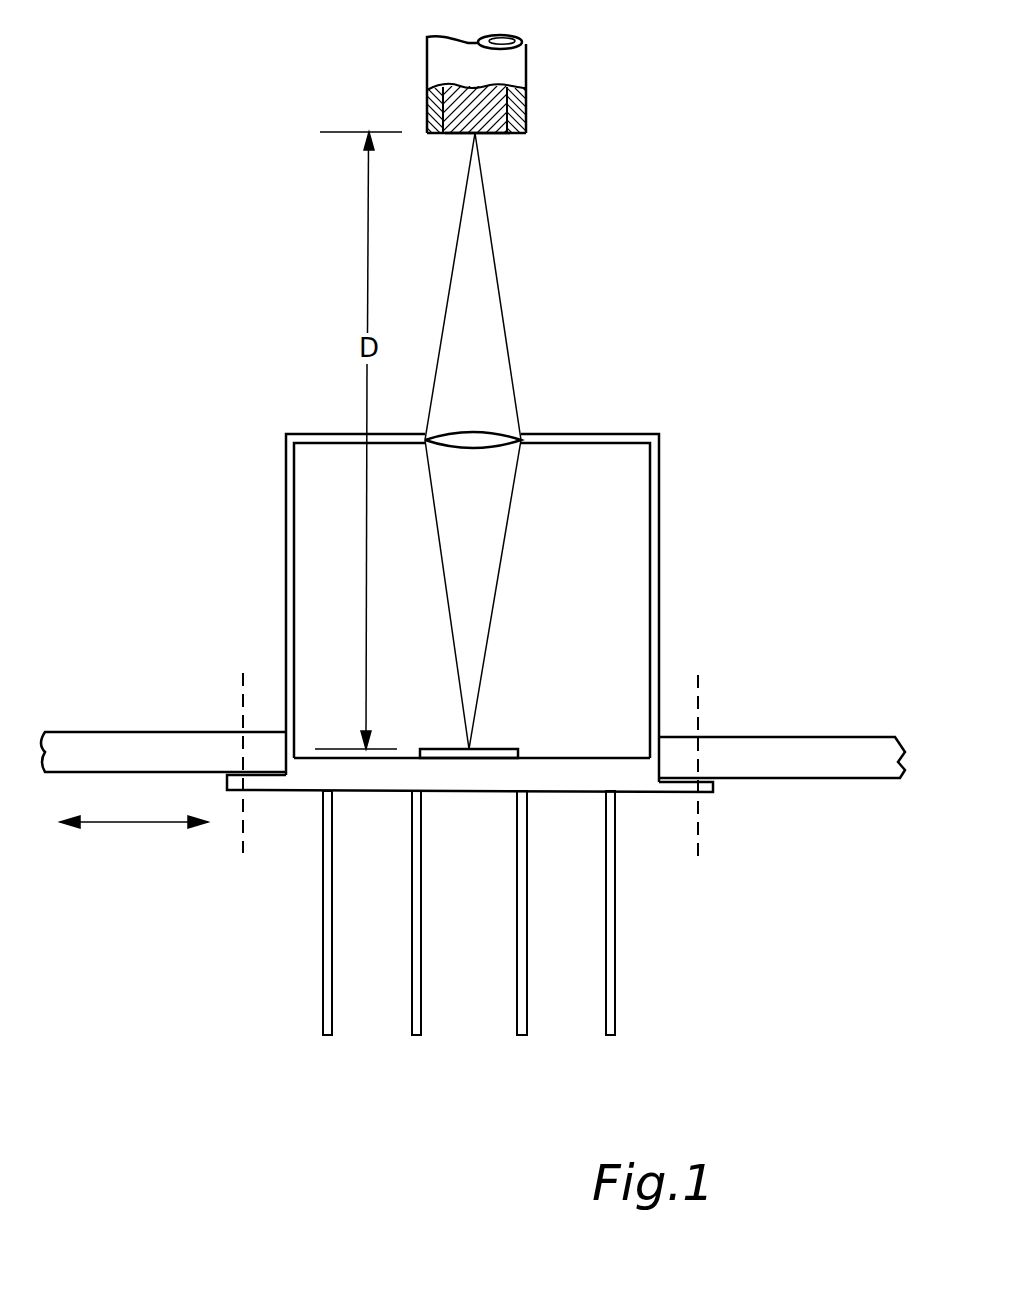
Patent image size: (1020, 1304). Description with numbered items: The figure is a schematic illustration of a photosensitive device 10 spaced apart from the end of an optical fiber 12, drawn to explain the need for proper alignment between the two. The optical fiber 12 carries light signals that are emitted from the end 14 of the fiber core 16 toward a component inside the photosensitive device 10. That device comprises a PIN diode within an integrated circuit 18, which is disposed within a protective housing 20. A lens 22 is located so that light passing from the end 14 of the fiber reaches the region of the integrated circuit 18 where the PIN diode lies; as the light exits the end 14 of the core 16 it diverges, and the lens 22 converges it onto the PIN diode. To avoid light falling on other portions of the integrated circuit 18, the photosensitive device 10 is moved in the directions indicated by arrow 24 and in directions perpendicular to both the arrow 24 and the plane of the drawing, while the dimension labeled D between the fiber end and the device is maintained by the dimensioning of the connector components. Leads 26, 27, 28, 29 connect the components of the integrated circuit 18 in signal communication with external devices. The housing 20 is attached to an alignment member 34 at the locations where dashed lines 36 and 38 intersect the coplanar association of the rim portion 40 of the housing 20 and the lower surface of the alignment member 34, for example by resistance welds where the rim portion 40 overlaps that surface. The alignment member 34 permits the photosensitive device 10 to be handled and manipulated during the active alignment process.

The photosensitive device 10 is at (722, 502).
The optical fiber 12 is at (516, 68).
The end of the fiber core 14 is at (490, 134).
The fiber core 16 is at (498, 108).
The integrated circuit 18 is at (493, 756).
The protective housing 20 is at (286, 517).
The lens 22 is at (490, 438).
The arrow 24 is at (143, 823).
The lead 26 is at (332, 1018).
The lead 27 is at (421, 1016).
The lead 28 is at (527, 1018).
The lead 29 is at (615, 1016).
The alignment member 34 is at (855, 770).
The dashed line 36 is at (243, 853).
The dashed line 38 is at (698, 857).
The rim portion 40 is at (713, 783).